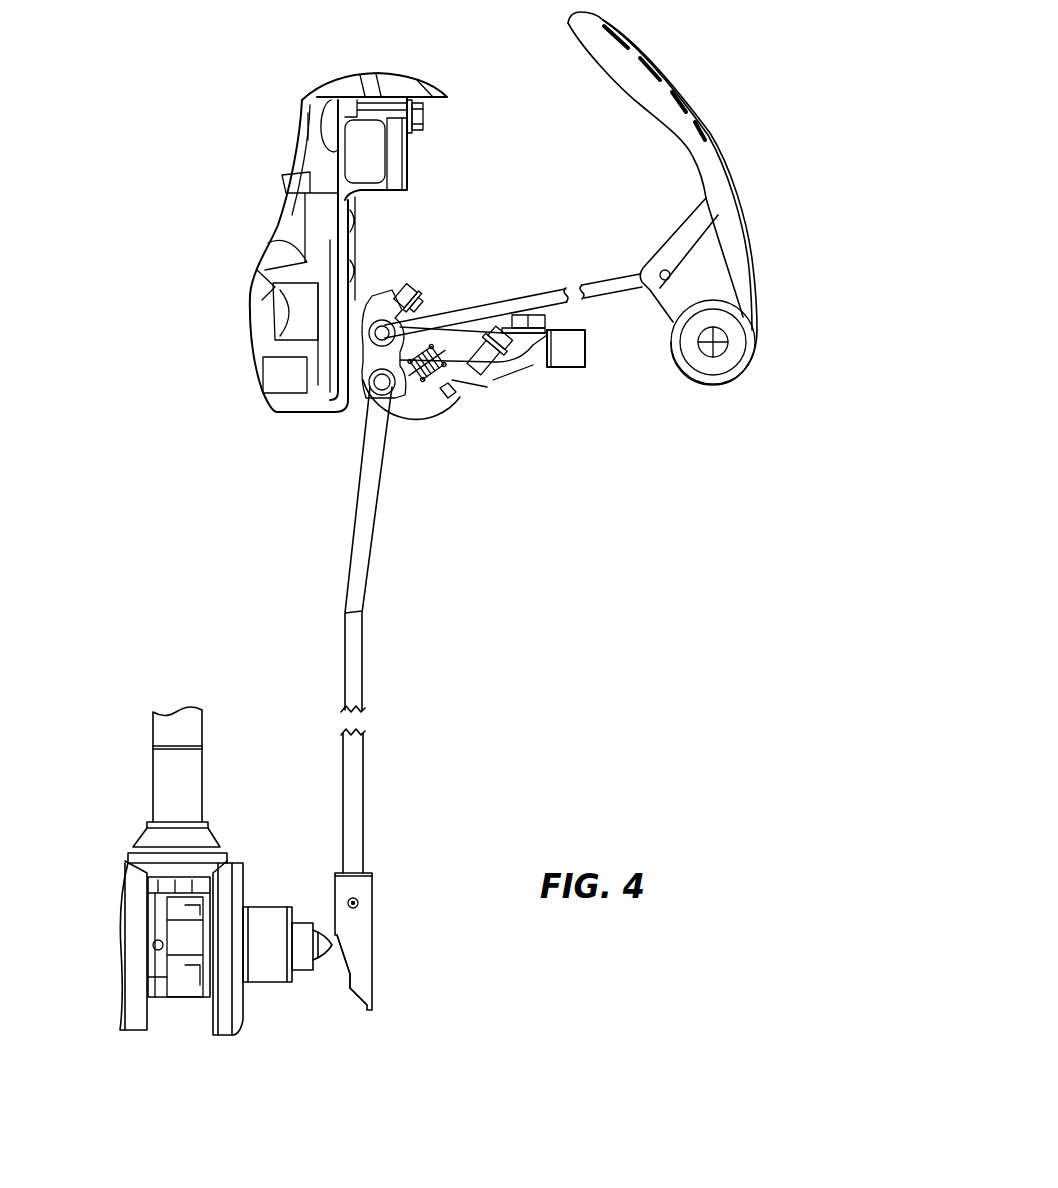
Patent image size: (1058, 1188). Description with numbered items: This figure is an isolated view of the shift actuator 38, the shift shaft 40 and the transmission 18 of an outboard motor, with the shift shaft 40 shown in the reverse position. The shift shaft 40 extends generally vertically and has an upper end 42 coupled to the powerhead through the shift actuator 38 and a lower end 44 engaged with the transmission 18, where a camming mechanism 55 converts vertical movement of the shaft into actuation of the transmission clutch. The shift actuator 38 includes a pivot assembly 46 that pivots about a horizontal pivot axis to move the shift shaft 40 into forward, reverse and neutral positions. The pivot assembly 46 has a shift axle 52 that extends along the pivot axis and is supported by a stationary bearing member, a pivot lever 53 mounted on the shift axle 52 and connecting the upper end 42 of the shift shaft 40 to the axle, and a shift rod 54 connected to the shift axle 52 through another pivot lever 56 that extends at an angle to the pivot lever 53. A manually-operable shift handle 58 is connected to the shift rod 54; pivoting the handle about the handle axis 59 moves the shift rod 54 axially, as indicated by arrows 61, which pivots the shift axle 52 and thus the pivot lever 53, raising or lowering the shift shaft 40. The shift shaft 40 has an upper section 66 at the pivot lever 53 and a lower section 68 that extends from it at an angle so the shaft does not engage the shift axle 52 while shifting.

The transmission 18 is at (110, 1043).
The shift actuator 38 is at (557, 420).
The shift shaft 40 is at (367, 548).
The upper end 42 is at (343, 427).
The lower end 44 is at (372, 865).
The pivot assembly 46 is at (455, 400).
The shift axle 52 is at (415, 365).
The pivot lever 53 is at (403, 395).
The shift rod 54 is at (530, 303).
The camming mechanism 55 is at (377, 950).
The pivot lever 56 is at (425, 287).
The shift handle 58 is at (710, 153).
The handle axis 59 is at (723, 347).
The arrows 61 is at (472, 290).
The upper section 66 is at (372, 478).
The lower section 68 is at (353, 662).